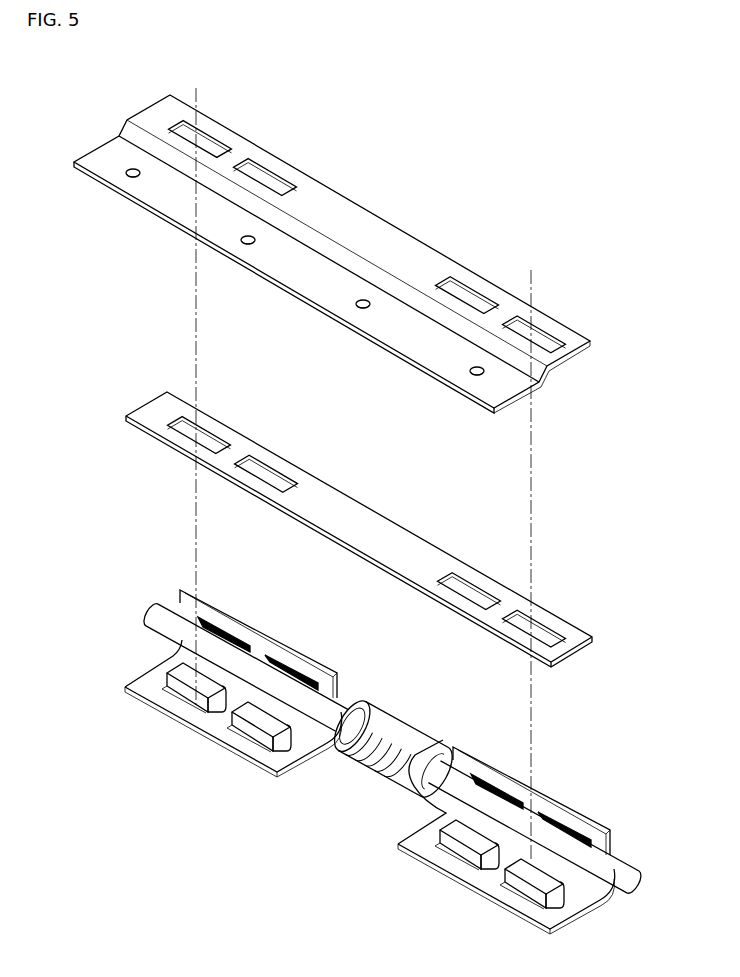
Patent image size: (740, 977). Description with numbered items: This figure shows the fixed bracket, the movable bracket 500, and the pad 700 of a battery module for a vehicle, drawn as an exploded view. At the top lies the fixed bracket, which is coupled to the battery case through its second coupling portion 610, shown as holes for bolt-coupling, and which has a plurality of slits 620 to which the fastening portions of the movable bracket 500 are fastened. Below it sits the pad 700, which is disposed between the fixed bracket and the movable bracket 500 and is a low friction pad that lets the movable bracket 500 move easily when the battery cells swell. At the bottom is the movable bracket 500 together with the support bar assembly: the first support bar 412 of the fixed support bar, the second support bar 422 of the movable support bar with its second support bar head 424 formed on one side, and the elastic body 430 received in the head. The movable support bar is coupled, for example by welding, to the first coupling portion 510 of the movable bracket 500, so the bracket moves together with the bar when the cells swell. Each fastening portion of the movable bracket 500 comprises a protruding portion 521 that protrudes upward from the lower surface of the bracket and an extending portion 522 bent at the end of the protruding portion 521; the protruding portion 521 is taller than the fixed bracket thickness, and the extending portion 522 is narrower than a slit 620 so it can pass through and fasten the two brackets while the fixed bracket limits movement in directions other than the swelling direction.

The first support bar 412 is at (603, 868).
The second support bar 422 is at (153, 610).
The second support bar head 424 is at (383, 722).
The elastic body 430 is at (373, 770).
The movable bracket 500 is at (173, 707).
The first coupling portion 510 is at (232, 634).
The protruding portion 521 is at (278, 748).
The extending portion 522 is at (258, 720).
The second coupling portion 610 is at (241, 241).
The slits 620 is at (200, 140).
The pad 700 is at (372, 522).